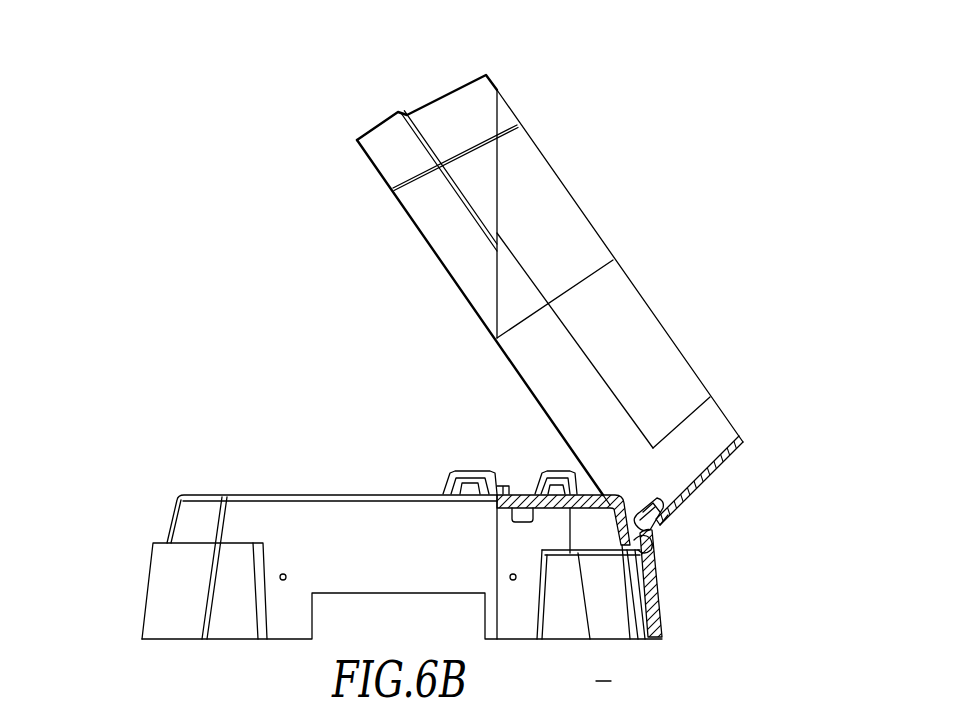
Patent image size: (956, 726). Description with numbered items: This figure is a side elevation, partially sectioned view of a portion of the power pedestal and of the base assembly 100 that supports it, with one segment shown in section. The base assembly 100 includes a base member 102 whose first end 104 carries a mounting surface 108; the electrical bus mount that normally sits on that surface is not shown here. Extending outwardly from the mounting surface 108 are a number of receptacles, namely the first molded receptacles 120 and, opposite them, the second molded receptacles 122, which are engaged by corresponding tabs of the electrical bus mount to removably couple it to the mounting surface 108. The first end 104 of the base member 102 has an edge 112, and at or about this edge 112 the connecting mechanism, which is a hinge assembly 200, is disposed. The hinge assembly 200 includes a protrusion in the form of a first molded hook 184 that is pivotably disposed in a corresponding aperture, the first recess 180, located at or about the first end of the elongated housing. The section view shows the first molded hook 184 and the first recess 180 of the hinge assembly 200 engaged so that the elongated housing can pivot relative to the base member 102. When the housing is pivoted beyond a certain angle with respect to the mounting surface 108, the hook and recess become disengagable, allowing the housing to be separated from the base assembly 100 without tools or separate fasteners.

The base assembly 100 is at (130, 391).
The base member 102 is at (162, 583).
The first end 104 is at (433, 115).
The mounting surface 108 is at (312, 475).
The edge 112 is at (631, 490).
The first molded receptacles 120 is at (483, 492).
The second molded receptacles 122 is at (527, 493).
The first recess 180 is at (668, 513).
The first molded hook 184 is at (653, 560).
The hinge assembly 200 is at (689, 534).